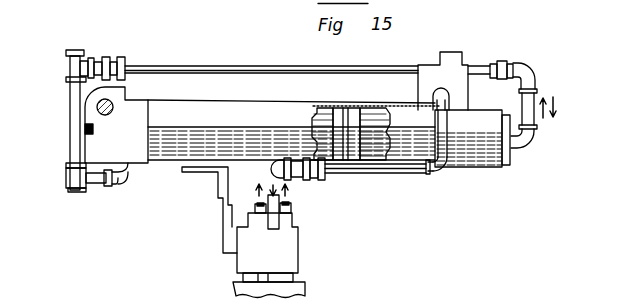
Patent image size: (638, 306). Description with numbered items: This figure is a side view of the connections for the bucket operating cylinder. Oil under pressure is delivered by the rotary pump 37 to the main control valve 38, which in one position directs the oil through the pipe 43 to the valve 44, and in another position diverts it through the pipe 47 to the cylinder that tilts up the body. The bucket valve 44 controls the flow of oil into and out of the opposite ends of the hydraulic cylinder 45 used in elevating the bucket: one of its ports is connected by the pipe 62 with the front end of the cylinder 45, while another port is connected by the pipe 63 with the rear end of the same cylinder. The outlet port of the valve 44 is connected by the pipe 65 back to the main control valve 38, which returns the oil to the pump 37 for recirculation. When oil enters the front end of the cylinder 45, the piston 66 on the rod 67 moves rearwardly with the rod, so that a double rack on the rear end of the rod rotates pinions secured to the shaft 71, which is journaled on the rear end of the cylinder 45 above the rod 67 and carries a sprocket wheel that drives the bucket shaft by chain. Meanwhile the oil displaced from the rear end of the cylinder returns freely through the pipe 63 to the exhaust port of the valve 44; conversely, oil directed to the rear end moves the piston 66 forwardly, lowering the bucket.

The rotary pump 37 is at (303, 284).
The main control valve 38 is at (290, 244).
The pipe 43 is at (240, 207).
The valve 44 is at (454, 51).
The hydraulic cylinder 45 is at (414, 168).
The pipe 47 is at (291, 206).
The pipe 62 is at (527, 77).
The pipe 63 is at (243, 67).
The pipe 65 is at (343, 175).
The piston 66 is at (351, 124).
The rod 67 is at (84, 128).
The shaft 71 is at (110, 113).